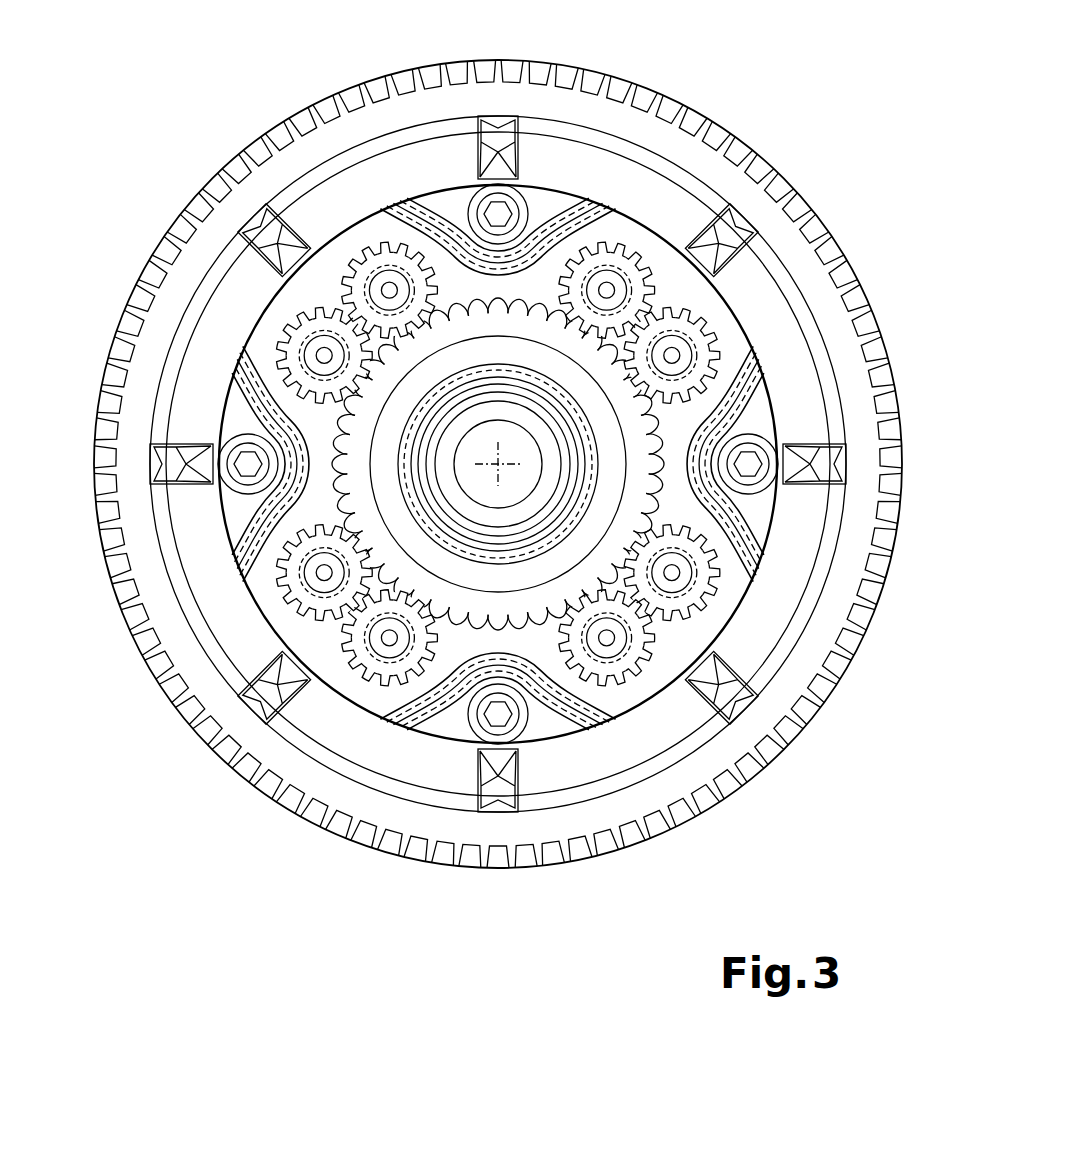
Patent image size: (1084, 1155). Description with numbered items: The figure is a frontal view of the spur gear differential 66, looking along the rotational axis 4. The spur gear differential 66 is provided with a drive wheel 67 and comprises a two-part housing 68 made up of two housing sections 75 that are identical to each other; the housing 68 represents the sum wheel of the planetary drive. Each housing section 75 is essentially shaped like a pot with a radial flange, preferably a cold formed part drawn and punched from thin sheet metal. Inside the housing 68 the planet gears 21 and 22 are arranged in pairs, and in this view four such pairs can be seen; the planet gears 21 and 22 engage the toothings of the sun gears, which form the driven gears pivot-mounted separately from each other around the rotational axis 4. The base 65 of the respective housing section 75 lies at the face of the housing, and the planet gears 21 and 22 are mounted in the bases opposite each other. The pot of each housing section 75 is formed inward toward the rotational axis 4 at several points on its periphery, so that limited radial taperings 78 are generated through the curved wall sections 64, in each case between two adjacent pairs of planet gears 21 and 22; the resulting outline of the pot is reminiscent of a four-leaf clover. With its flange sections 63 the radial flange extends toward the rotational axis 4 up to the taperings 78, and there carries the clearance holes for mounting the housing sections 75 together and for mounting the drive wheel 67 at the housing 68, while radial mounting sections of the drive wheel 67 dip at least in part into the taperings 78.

The rotational axis 4 is at (498, 464).
The planet gear 21 is at (710, 323).
The planet gear 22 is at (650, 263).
The flange section 63 is at (450, 205).
The curved wall section 64 is at (572, 208).
The base 65 is at (688, 682).
The spur gear differential 66 is at (327, 73).
The drive wheel 67 is at (684, 100).
The housing 68 is at (783, 330).
The housing section 75 is at (548, 727).
The radial tapering 78 is at (540, 205).